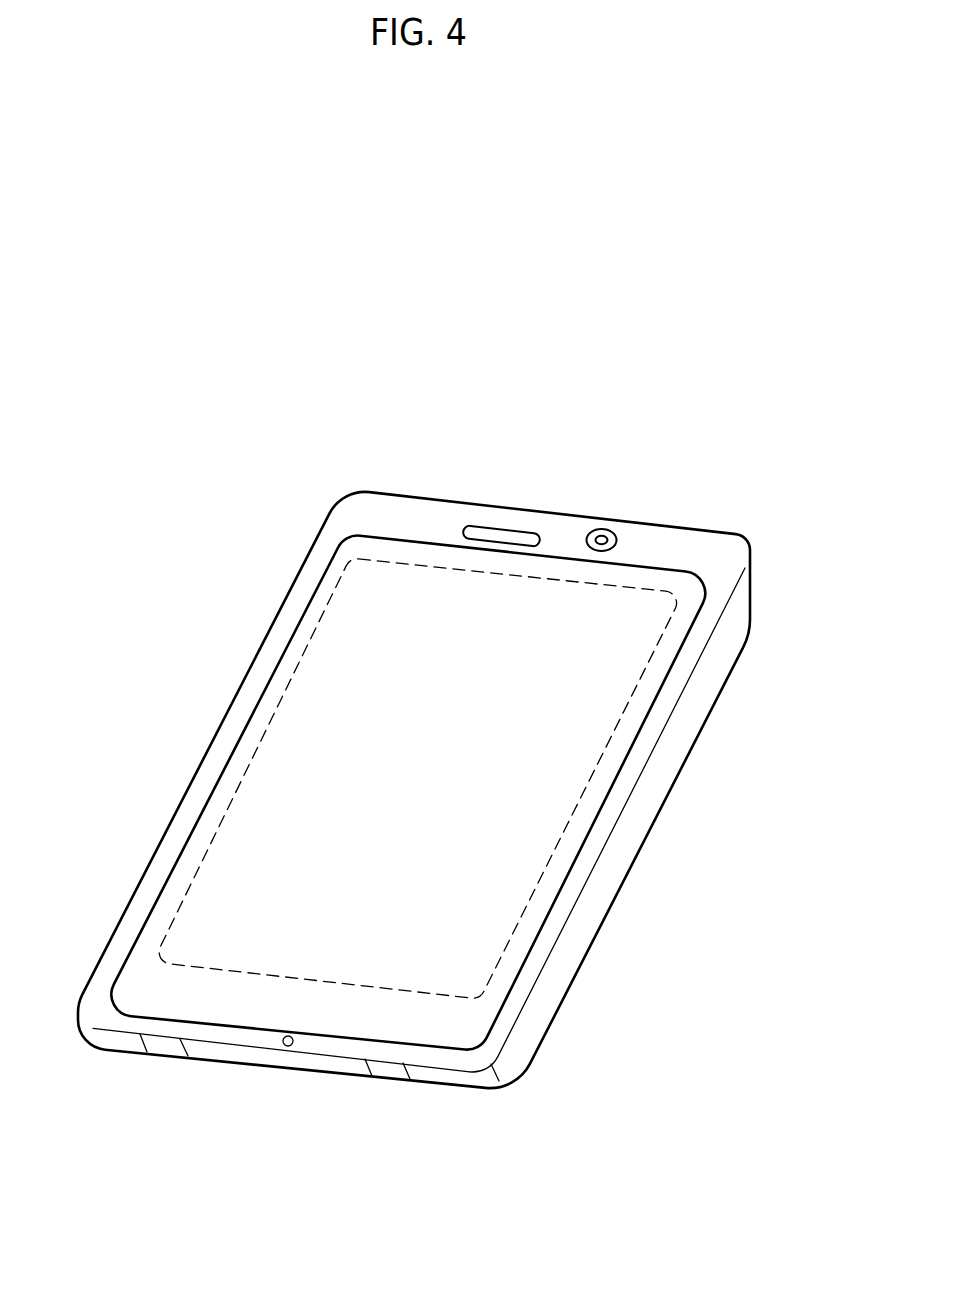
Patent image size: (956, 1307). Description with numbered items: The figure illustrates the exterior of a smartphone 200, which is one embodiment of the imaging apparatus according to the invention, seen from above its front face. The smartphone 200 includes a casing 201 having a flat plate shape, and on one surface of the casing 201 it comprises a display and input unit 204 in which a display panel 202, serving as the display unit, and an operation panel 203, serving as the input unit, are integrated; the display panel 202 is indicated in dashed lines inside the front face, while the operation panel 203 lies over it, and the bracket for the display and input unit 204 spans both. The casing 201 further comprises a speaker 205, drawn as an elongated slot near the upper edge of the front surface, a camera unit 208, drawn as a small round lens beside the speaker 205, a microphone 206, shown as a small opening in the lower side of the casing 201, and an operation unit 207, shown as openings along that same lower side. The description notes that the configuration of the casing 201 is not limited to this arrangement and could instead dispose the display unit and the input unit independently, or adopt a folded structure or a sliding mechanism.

The smartphone 200 is at (188, 586).
The casing 201 is at (352, 512).
The display panel 202 is at (638, 587).
The operation panel 203 is at (687, 570).
The display and input unit 204 is at (793, 428).
The speaker 205 is at (500, 527).
The microphone 206 is at (287, 1047).
The operation unit 207 is at (165, 1055).
The camera unit 208 is at (594, 529).